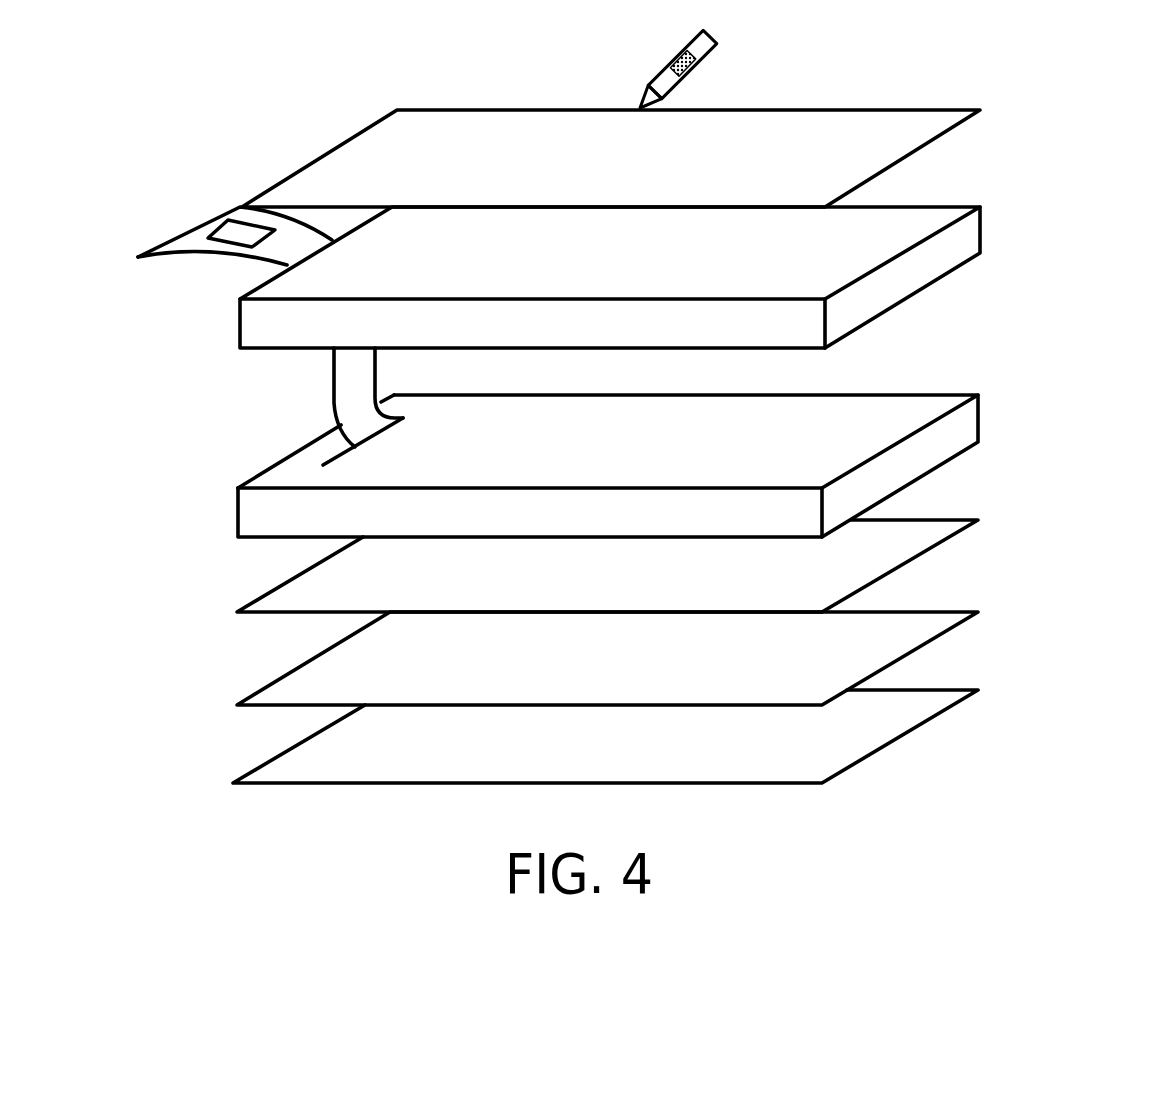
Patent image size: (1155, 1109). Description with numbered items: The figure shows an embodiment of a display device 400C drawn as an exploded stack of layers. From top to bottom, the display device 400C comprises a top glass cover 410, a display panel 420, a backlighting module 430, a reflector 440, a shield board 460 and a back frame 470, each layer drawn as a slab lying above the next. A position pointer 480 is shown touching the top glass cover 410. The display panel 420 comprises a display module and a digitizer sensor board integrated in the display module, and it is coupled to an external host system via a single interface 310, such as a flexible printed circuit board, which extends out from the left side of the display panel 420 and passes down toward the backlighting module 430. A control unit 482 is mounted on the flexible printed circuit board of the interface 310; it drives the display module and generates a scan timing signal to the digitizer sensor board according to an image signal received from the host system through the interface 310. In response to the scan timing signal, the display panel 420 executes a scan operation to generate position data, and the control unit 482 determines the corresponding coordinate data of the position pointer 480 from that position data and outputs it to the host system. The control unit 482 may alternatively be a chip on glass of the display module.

The top glass cover 410 is at (918, 128).
The display panel 420 is at (918, 222).
The backlighting module 430 is at (913, 413).
The reflector 440 is at (913, 527).
The shield board 460 is at (913, 618).
The back frame 470 is at (913, 707).
The position pointer 480 is at (692, 75).
The control unit 482 is at (235, 230).
The interface 310 is at (170, 243).
The display device 400C is at (1113, 783).